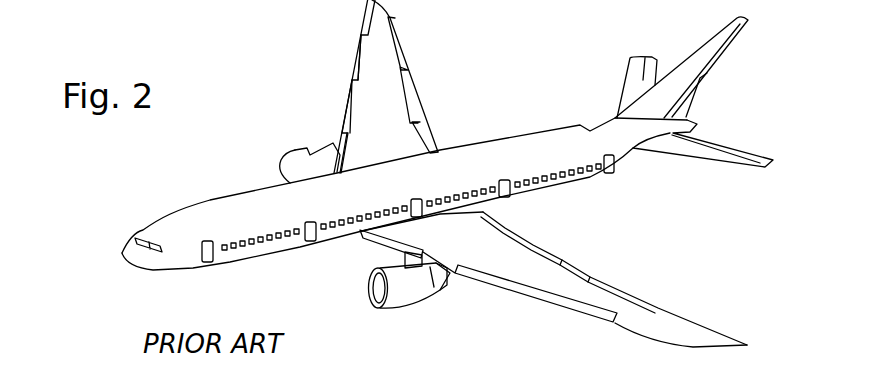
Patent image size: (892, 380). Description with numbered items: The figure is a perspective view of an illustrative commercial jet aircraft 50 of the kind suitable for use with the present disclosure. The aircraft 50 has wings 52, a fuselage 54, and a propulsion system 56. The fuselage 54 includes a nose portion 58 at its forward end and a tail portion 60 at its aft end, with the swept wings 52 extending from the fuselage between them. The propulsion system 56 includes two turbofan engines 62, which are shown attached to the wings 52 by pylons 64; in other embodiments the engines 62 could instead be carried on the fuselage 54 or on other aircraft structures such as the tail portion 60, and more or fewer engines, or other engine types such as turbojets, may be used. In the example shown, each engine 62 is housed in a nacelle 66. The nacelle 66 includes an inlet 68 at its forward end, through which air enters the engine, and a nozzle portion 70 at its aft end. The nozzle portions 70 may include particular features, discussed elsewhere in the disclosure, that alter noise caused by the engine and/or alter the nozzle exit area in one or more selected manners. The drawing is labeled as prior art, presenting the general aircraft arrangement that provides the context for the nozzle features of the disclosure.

The commercial jet aircraft 50 is at (78, 262).
The wings 52 is at (387, 2).
The fuselage 54 is at (462, 160).
The propulsion system 56 is at (345, 282).
The nose portion 58 is at (131, 283).
The tail portion 60 is at (645, 194).
The turbofan engine 62 is at (407, 307).
The pylon 64 is at (405, 262).
The nacelle 66 is at (447, 318).
The inlet 68 is at (377, 292).
The nozzle portion 70 is at (457, 281).